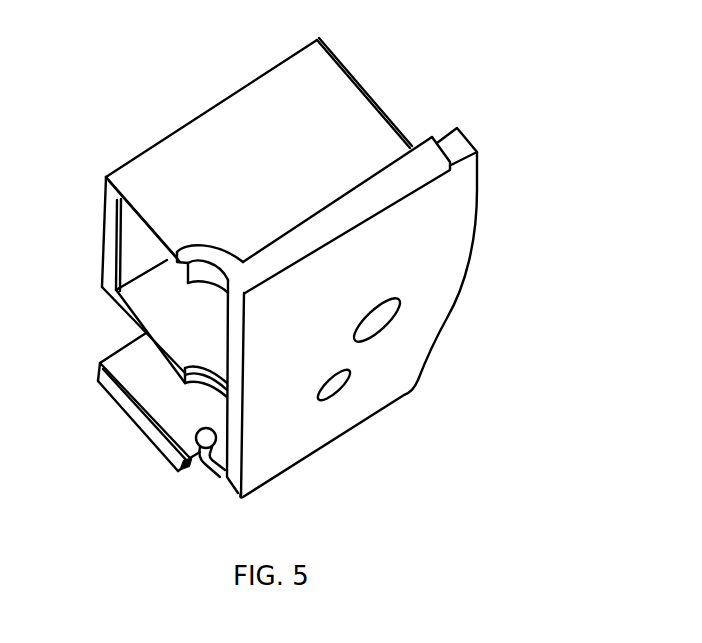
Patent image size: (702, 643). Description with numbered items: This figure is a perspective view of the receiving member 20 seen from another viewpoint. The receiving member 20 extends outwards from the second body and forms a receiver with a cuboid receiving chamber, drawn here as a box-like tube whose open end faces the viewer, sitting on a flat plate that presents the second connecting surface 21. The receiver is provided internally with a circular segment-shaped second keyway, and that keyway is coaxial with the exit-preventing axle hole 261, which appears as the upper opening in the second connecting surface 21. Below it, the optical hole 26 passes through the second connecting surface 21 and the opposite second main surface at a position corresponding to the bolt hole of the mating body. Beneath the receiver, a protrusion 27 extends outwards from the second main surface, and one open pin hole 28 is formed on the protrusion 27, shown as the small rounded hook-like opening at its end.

The receiving member 20 is at (533, 161).
The second connecting surface 21 is at (448, 237).
The exit-preventing axle hole 261 is at (382, 320).
The optical hole 26 is at (338, 387).
The protrusion 27 is at (146, 393).
The open pin hole 28 is at (198, 432).